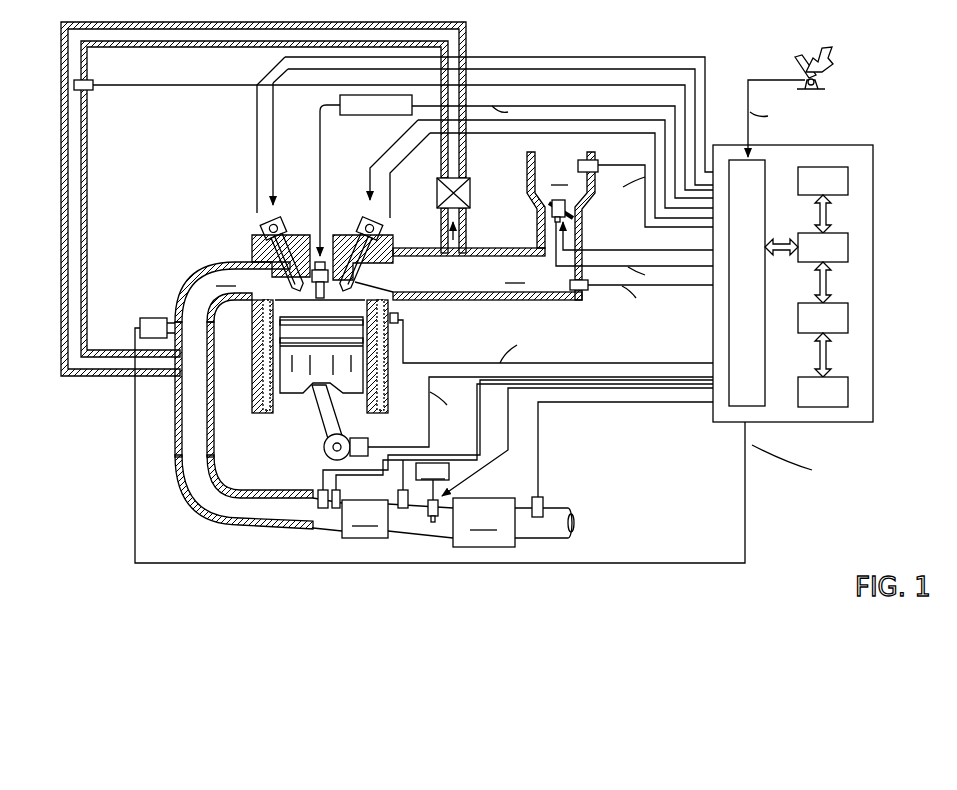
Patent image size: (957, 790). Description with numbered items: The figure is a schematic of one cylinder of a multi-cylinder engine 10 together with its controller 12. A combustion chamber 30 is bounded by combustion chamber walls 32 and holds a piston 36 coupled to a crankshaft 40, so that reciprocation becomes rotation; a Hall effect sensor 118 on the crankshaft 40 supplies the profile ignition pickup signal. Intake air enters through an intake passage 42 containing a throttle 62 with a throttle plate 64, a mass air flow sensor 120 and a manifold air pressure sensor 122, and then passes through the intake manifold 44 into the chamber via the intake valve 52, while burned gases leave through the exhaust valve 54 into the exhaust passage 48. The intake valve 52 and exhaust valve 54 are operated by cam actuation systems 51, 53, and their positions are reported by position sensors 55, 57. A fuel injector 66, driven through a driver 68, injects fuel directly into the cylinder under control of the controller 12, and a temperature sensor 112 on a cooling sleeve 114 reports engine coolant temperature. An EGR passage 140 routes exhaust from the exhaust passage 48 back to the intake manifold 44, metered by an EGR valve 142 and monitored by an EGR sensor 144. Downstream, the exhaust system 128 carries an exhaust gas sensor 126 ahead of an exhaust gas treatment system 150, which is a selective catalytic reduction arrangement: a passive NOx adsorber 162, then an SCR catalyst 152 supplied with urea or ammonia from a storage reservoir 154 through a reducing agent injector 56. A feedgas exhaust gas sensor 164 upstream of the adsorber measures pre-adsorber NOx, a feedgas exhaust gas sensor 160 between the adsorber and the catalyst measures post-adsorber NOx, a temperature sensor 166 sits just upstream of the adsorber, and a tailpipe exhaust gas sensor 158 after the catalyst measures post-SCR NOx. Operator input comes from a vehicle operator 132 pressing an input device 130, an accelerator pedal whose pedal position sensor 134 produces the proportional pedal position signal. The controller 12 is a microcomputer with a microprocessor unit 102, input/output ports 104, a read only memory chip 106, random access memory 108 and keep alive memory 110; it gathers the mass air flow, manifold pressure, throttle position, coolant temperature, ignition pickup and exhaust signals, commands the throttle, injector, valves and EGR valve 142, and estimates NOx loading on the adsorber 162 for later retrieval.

The engine 10 is at (203, 198).
The controller 12 is at (873, 150).
The combustion chamber 30 is at (258, 372).
The combustion chamber walls 32 is at (283, 405).
The piston 36 is at (311, 378).
The crankshaft 40 is at (324, 448).
The intake passage 42 is at (561, 226).
The intake manifold 44 is at (487, 274).
The exhaust passage 48 is at (232, 292).
The cam actuation system 51 is at (358, 208).
The intake valve 52 is at (357, 282).
The cam actuation system 53 is at (280, 209).
The exhaust valve 54 is at (278, 256).
The position sensor 55 is at (380, 224).
The reductant injector 56 is at (568, 455).
The position sensor 57 is at (265, 222).
The throttle 62 is at (572, 208).
The throttle plate 64 is at (550, 208).
The fuel injector 66 is at (323, 262).
The electronic driver 68 is at (395, 116).
The microprocessor unit 102 is at (848, 245).
The input/output ports 104 is at (768, 165).
The read only memory chip 106 is at (848, 180).
The random access memory 108 is at (848, 315).
The keep alive memory 110 is at (848, 390).
The temperature sensor 112 is at (397, 324).
The cooling sleeve 114 is at (380, 380).
The Hall effect sensor 118 is at (362, 441).
The mass air flow sensor 120 is at (596, 161).
The manifold air pressure sensor 122 is at (587, 290).
The exhaust gas sensor 126 is at (140, 322).
The exhaust system 128 is at (200, 524).
The input device 130 is at (797, 60).
The vehicle operator 132 is at (835, 55).
The pedal position sensor 134 is at (825, 82).
The EGR passage 140 is at (262, 26).
The EGR valve 142 is at (471, 198).
The EGR sensor 144 is at (91, 90).
The exhaust gas treatment system 150 is at (548, 468).
The SCR catalyst 152 is at (513, 522).
The storage reservoir 154 is at (432, 481).
The tailpipe exhaust gas sensor 158 is at (545, 498).
The feedgas exhaust gas sensor 160 is at (397, 496).
The passive NOx adsorber 162 is at (365, 519).
The feedgas exhaust gas sensor 164 is at (318, 494).
The temperature sensor 166 is at (340, 494).